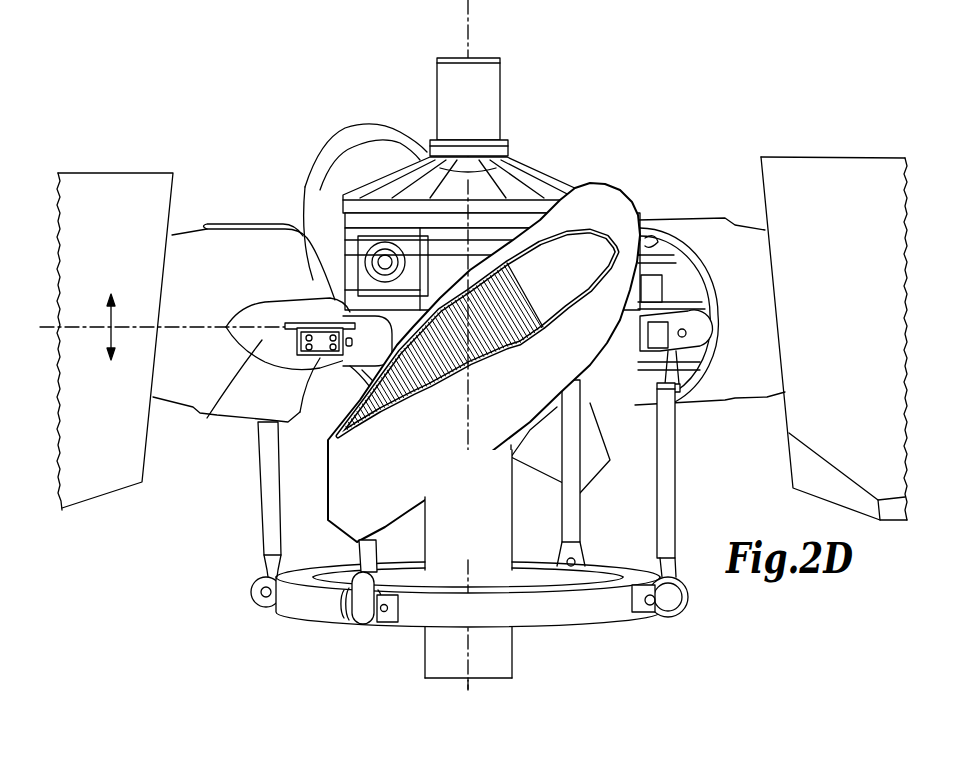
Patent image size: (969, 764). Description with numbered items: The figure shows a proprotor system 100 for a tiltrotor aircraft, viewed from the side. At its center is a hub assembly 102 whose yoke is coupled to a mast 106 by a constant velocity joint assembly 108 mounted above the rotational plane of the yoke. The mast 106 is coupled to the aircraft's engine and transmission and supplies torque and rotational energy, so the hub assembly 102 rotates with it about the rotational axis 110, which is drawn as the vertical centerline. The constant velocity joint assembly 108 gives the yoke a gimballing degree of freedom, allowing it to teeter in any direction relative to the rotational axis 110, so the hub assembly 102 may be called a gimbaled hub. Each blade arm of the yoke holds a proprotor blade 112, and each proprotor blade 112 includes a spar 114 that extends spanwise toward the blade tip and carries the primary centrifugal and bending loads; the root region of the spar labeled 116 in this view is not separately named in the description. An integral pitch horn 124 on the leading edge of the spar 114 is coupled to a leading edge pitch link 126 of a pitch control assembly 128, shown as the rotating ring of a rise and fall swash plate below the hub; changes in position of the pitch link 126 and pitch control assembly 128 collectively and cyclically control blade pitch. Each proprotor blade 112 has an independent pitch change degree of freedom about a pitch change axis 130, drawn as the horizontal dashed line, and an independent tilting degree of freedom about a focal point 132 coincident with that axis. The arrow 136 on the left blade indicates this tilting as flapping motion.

The proprotor system 100 is at (688, 44).
The hub assembly 102 is at (544, 150).
The mast 106 is at (437, 78).
The constant velocity joint assembly 108 is at (569, 163).
The rotational axis 110 is at (465, 38).
The proprotor blade 112 is at (105, 188).
The spar 114 is at (188, 245).
The blade root 116 is at (232, 262).
The pitch horn 124 is at (224, 390).
The leading edge pitch link 126 is at (320, 358).
The pitch control assembly 128 is at (313, 630).
The pitch change axis 130 is at (210, 326).
The focal point 132 is at (320, 328).
The arrow 136 is at (105, 318).